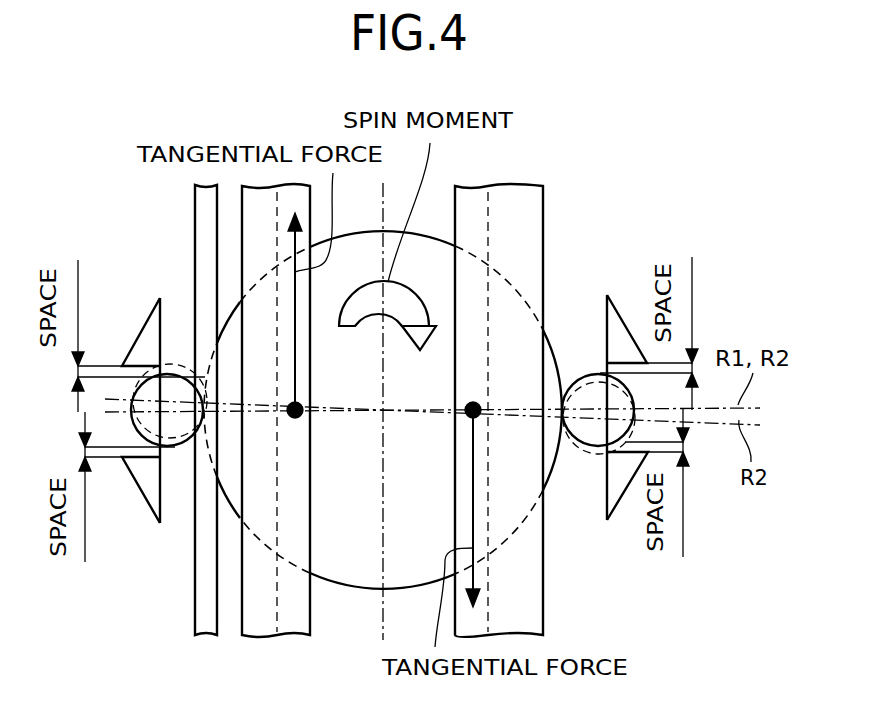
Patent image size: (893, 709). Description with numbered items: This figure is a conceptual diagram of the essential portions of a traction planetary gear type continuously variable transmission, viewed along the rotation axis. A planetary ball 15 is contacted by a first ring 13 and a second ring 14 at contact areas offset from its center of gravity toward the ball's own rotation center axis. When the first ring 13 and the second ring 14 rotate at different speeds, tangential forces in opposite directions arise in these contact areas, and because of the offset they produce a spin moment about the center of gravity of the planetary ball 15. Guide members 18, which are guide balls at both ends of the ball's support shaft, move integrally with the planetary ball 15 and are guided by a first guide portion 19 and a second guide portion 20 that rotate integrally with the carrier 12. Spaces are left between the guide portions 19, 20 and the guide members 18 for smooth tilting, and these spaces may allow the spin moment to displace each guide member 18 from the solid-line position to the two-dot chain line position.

The carrier 12 is at (195, 580).
The first ring 13 is at (543, 598).
The second ring 14 is at (310, 615).
The planetary ball 15 is at (367, 590).
The guide member 18 is at (180, 372).
The first guide portion 19 is at (643, 398).
The second guide portion 20 is at (132, 401).